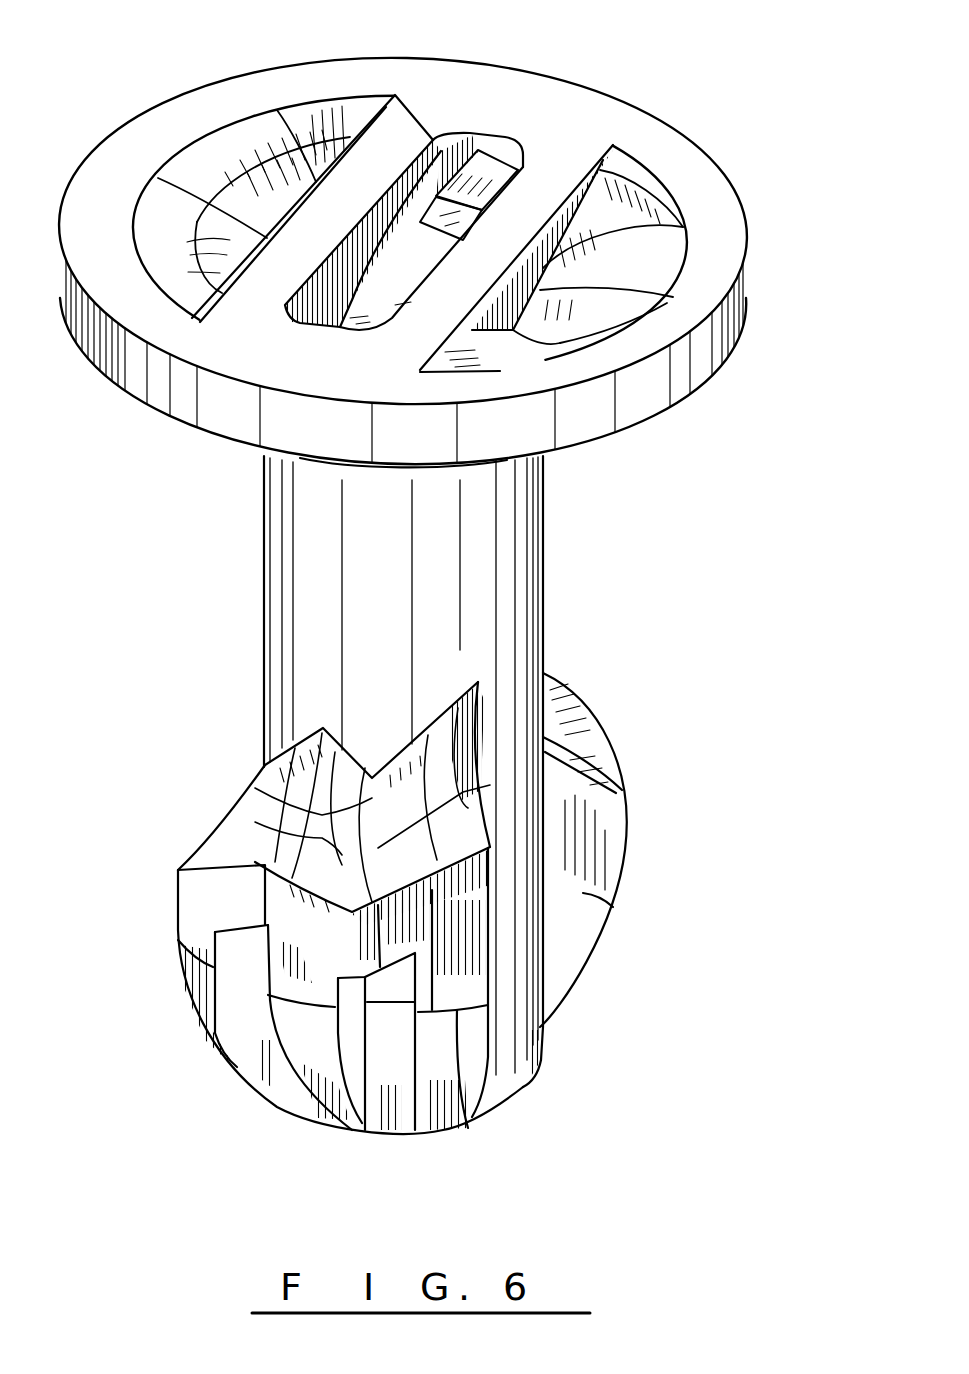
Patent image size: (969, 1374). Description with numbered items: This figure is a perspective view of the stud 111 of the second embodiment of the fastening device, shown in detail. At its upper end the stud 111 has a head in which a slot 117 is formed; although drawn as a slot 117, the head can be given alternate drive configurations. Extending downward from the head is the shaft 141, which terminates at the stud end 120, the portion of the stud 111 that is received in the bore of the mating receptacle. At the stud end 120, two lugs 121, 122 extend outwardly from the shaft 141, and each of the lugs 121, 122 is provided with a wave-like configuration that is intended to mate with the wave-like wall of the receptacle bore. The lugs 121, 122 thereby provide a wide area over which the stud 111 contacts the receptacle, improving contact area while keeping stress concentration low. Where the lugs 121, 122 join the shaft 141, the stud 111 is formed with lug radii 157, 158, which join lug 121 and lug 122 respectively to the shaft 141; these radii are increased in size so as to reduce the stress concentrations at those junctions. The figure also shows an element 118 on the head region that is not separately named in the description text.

The stud 111 is at (450, 570).
The slot 117 is at (430, 140).
The spherical recess in head 118 is at (688, 180).
The stud end 120 is at (500, 1075).
The lug 121 is at (215, 883).
The lug 122 is at (600, 900).
The shaft 141 is at (520, 530).
The lug radius 157 is at (292, 820).
The lug radius 158 is at (565, 702).